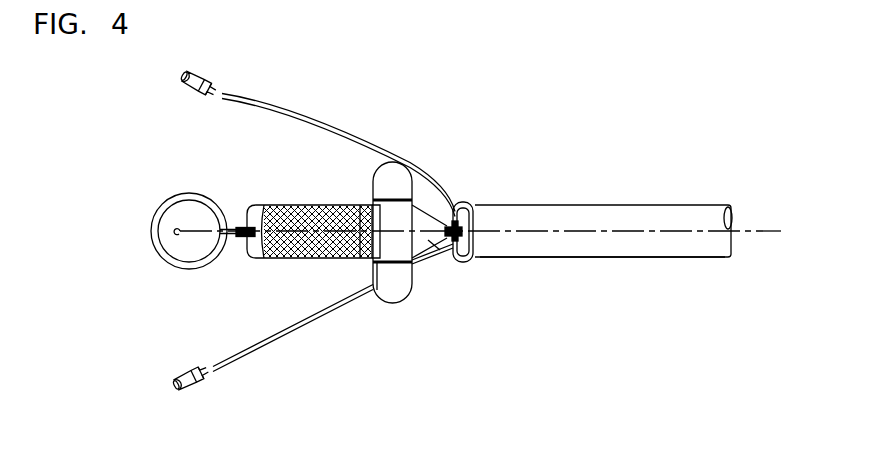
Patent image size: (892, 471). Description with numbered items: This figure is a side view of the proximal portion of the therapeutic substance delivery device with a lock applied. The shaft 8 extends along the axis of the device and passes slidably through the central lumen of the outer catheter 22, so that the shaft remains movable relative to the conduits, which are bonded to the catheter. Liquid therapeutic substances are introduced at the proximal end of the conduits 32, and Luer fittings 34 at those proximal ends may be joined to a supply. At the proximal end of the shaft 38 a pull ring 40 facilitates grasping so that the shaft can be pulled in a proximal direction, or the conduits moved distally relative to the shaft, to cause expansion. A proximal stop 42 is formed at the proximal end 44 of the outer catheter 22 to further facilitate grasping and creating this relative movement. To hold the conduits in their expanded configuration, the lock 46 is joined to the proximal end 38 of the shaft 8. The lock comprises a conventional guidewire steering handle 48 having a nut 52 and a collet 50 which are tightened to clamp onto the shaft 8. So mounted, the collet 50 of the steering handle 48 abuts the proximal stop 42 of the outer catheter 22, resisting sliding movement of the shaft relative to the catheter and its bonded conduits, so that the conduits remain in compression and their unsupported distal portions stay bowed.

The shaft 8 is at (755, 229).
The outer catheter 22 is at (540, 257).
The proximal end of the conduits 32 is at (263, 100).
The Luer fittings 34 is at (187, 64).
The proximal end of the shaft 38 is at (235, 242).
The pull ring 40 is at (185, 272).
The proximal stop 42 is at (463, 203).
The proximal end of the outer catheter 44 is at (531, 205).
The lock 46 is at (328, 194).
The guidewire steering handle 48 is at (267, 207).
The collet 50 is at (437, 244).
The nut 52 is at (386, 187).